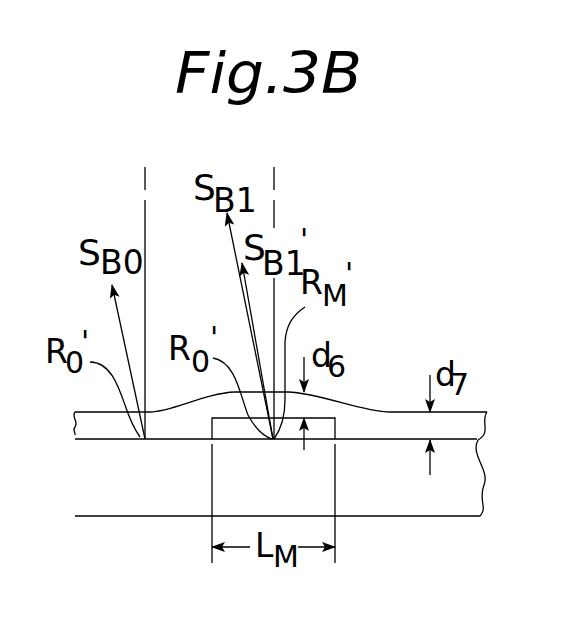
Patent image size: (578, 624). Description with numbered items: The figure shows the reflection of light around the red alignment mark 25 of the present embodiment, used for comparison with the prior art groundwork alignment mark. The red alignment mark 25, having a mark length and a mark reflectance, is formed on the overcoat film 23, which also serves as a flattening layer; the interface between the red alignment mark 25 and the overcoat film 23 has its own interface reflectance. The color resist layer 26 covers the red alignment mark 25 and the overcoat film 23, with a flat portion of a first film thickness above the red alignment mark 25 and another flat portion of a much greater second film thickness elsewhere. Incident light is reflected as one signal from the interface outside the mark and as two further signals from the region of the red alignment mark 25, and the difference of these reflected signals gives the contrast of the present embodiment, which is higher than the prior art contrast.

The overcoat film 23 is at (470, 476).
The red alignment mark 25 is at (328, 428).
The color resist layer 26 is at (470, 425).